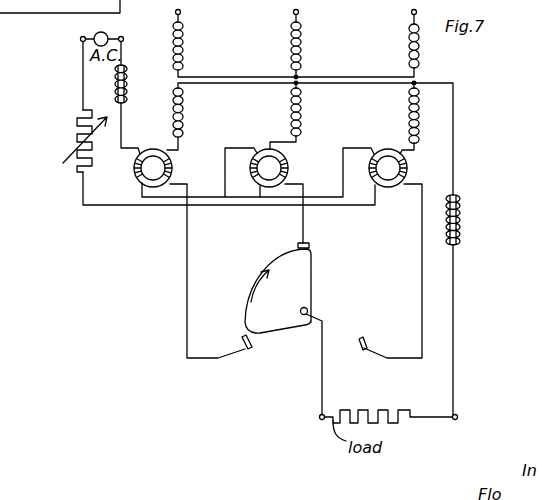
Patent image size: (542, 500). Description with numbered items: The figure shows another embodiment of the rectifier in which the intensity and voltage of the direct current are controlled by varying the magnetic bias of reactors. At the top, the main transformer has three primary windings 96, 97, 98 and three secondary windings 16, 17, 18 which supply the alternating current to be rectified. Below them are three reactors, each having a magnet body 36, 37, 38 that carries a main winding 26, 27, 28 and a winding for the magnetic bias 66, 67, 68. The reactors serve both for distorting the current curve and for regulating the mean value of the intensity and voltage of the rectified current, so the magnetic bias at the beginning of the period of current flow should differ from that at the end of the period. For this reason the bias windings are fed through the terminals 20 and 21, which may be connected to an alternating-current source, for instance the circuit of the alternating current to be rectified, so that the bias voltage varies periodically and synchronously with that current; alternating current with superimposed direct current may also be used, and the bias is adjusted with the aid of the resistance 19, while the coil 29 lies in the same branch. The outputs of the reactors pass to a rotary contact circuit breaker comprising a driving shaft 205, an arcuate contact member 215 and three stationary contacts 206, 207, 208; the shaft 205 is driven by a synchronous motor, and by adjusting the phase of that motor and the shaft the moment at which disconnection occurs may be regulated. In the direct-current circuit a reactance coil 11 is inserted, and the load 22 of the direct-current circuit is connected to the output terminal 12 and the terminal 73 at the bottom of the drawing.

The terminal 20 is at (80, 39).
The terminal 21 is at (124, 38).
The inductor coil 29 is at (128, 86).
The resistance 19 is at (78, 140).
The primary winding 96 is at (183, 47).
The primary winding 97 is at (301, 47).
The primary winding 98 is at (420, 51).
The secondary winding 16 is at (183, 105).
The secondary winding 17 is at (301, 105).
The secondary winding 18 is at (419, 105).
The magnet body 36 is at (153, 149).
The magnet body 37 is at (270, 149).
The magnet body 38 is at (388, 149).
The magnetic bias winding 66 is at (133, 170).
The magnetic bias winding 67 is at (250, 170).
The magnetic bias winding 68 is at (369, 170).
The main winding 26 is at (173, 169).
The main winding 27 is at (288, 170).
The main winding 28 is at (407, 170).
The reactance coil 11 is at (460, 228).
The stationary contact 207 is at (310, 246).
The arcuate contact member 215 is at (306, 280).
The driving shaft 205 is at (308, 311).
The stationary contact 208 is at (366, 345).
The stationary contact 206 is at (245, 349).
The output terminal 12 is at (325, 414).
The load 22 is at (390, 404).
The load terminal 73 is at (453, 414).